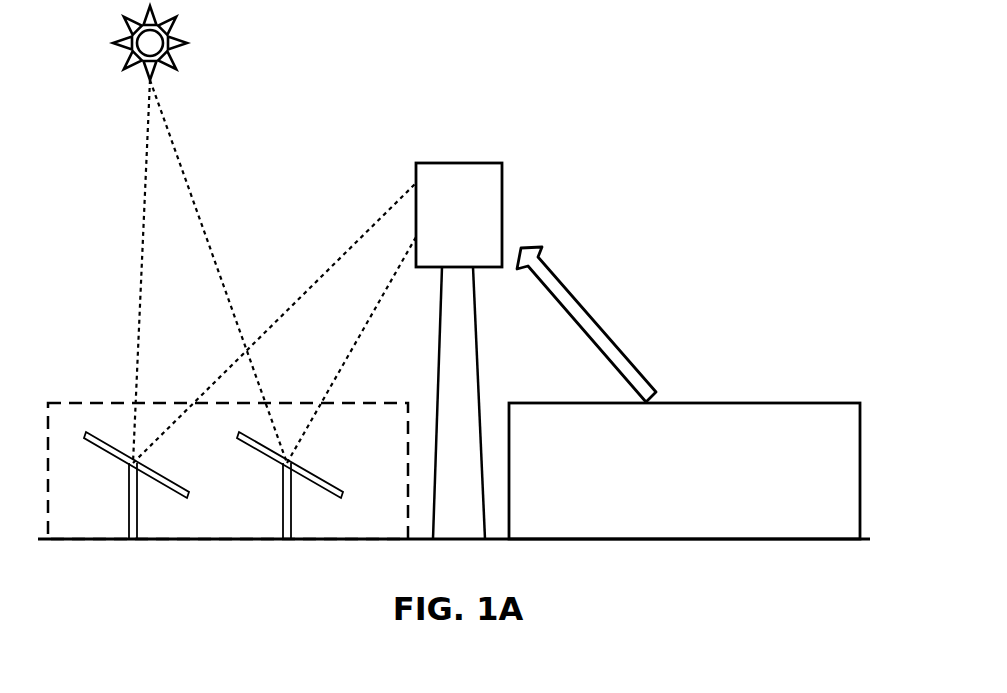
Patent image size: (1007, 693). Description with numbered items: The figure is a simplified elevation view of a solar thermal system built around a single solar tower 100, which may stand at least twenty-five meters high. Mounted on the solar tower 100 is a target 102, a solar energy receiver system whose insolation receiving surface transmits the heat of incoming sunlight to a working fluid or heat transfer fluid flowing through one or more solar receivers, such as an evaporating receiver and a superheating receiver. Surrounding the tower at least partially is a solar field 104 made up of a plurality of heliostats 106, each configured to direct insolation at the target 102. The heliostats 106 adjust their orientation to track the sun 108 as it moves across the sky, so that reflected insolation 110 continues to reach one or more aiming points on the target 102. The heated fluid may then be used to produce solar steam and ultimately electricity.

The solar tower 100 is at (453, 305).
The target 102 is at (477, 225).
The solar field 104 is at (704, 483).
The heliostat 106 is at (200, 518).
The sun 108 is at (116, 62).
The reflected insolation 110 is at (619, 324).